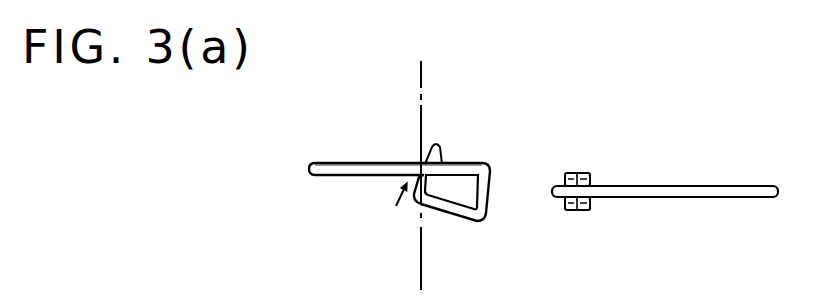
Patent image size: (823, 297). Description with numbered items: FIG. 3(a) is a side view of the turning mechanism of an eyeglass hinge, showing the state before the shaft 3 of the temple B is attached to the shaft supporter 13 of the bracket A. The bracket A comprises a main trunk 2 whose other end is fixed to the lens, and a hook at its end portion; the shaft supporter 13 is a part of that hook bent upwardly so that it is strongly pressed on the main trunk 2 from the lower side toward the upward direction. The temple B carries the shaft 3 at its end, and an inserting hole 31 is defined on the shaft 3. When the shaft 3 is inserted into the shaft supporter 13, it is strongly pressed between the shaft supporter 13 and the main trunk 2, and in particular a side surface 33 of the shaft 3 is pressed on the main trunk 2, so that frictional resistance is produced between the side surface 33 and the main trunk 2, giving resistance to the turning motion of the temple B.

The bracket A is at (399, 167).
The main trunk 2 is at (371, 178).
The shaft supporter 13 is at (431, 146).
The temple B is at (670, 186).
The shaft 3 is at (577, 197).
The inserting hole 31 is at (580, 210).
The side surface 33 is at (576, 173).